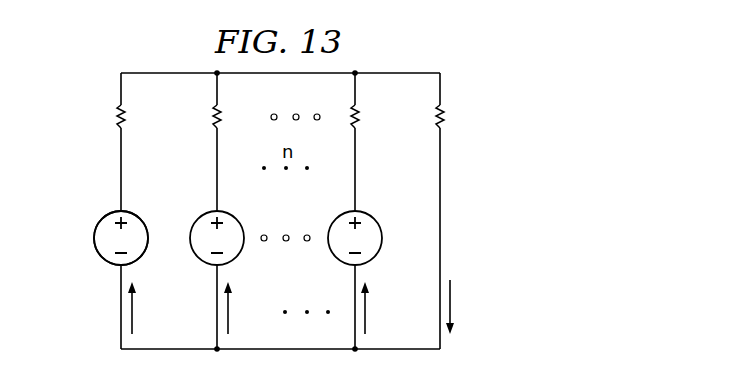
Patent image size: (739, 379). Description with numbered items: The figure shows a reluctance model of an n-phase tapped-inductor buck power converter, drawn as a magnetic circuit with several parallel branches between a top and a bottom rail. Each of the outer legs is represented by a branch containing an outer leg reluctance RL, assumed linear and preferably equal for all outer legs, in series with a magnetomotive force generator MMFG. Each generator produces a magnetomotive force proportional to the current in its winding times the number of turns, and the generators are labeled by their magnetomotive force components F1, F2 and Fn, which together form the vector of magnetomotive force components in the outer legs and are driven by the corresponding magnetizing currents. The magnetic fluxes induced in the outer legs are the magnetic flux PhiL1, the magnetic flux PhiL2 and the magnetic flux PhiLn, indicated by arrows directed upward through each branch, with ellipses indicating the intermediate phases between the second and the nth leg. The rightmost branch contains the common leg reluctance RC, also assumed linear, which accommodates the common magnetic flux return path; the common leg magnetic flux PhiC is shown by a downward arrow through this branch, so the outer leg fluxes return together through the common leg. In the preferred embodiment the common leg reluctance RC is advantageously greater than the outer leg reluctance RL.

The outer leg reluctance RL is at (251, 119).
The common leg reluctance RC is at (454, 119).
The magnetomotive force component F1 is at (121, 222).
The magnetomotive force component F2 is at (217, 222).
The magnetomotive force component Fn is at (355, 222).
The magnetomotive force generator MMFG is at (90, 238).
The magnetic flux PhiL1 is at (147, 308).
The magnetic flux PhiL2 is at (243, 308).
The magnetic flux PhiLn is at (380, 308).
The common leg magnetic flux PhiC is at (462, 307).